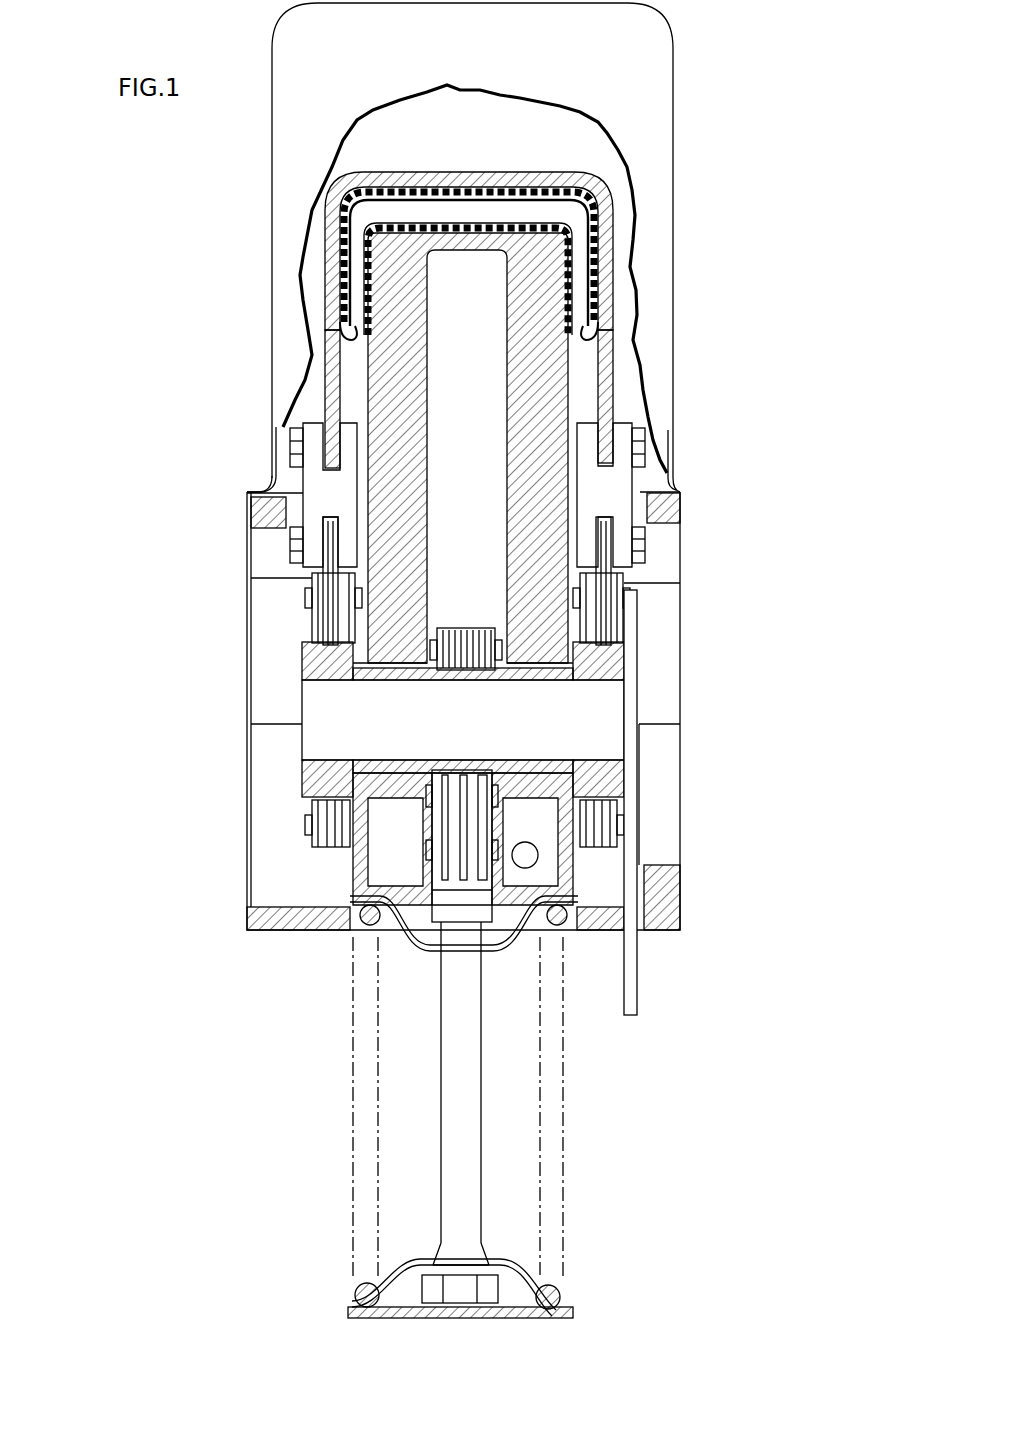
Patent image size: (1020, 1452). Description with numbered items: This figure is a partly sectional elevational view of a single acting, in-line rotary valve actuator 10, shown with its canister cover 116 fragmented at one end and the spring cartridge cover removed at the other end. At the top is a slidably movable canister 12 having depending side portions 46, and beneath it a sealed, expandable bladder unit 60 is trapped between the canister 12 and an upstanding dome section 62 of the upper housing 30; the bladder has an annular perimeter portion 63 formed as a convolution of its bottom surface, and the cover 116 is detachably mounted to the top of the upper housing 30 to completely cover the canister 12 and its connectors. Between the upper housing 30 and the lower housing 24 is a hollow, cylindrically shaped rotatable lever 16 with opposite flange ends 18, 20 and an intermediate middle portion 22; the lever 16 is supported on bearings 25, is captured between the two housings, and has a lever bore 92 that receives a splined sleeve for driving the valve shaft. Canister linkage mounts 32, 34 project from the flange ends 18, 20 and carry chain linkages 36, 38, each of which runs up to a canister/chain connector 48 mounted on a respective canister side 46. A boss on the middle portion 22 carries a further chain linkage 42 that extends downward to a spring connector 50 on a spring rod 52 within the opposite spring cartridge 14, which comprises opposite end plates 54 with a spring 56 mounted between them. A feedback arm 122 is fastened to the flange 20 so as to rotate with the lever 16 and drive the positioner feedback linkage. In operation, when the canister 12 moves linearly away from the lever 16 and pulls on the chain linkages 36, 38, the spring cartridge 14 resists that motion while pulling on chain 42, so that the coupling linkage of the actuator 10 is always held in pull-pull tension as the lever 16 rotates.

The rotary valve actuator 10 is at (712, 268).
The canister 12 is at (372, 185).
The spring cartridge 14 is at (322, 1110).
The rotatable lever 16 is at (304, 690).
The flange end 18 is at (302, 645).
The flange end 20 is at (625, 660).
The middle portion 22 is at (508, 662).
The lower housing 24 is at (680, 745).
The bearings 25 is at (385, 662).
The upper housing 30 is at (680, 506).
The canister linkage mount 32 is at (312, 838).
The canister linkage mount 34 is at (620, 840).
The chain linkage 36 is at (303, 610).
The chain linkage 38 is at (612, 617).
The chain linkage 42 is at (462, 630).
The side portions 46 is at (325, 372).
The canister/chain connector 48 is at (585, 452).
The spring connector 50 is at (467, 903).
The spring rod 52 is at (455, 1045).
The end plates 54 is at (410, 948).
The spring 56 is at (365, 925).
The bladder unit 60 is at (502, 200).
The dome section 62 is at (400, 256).
The annular perimeter portion 63 is at (348, 304).
The lever bore 92 is at (389, 737).
The canister cover 116 is at (661, 136).
The feedback arm 122 is at (637, 957).